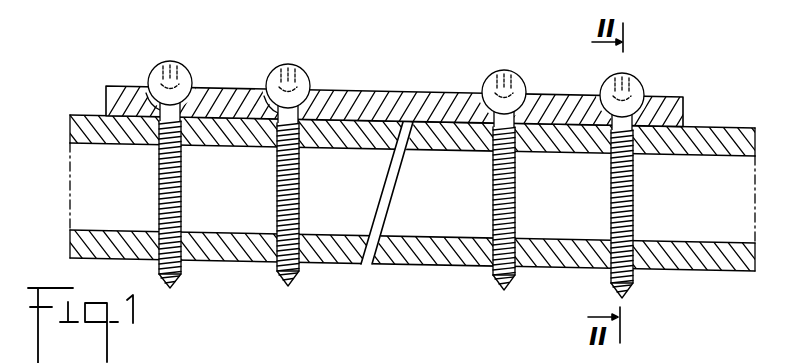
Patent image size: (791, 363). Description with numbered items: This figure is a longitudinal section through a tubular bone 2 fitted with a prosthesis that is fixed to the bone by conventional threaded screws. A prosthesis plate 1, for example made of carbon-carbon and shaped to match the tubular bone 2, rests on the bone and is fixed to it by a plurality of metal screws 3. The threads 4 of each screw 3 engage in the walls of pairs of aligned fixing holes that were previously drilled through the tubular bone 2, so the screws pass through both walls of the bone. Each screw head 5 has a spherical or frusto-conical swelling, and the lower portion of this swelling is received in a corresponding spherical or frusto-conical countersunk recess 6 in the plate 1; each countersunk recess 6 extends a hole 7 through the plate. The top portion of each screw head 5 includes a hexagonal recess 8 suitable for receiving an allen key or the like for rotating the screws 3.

The prosthesis plate 1 is at (378, 94).
The tubular bone 2 is at (78, 115).
The metal screw 3 is at (396, 178).
The thread 4 is at (181, 206).
The screw head 5 is at (267, 80).
The countersunk recess 6 is at (339, 99).
The hole 7 is at (158, 111).
The hexagonal recess 8 is at (491, 80).